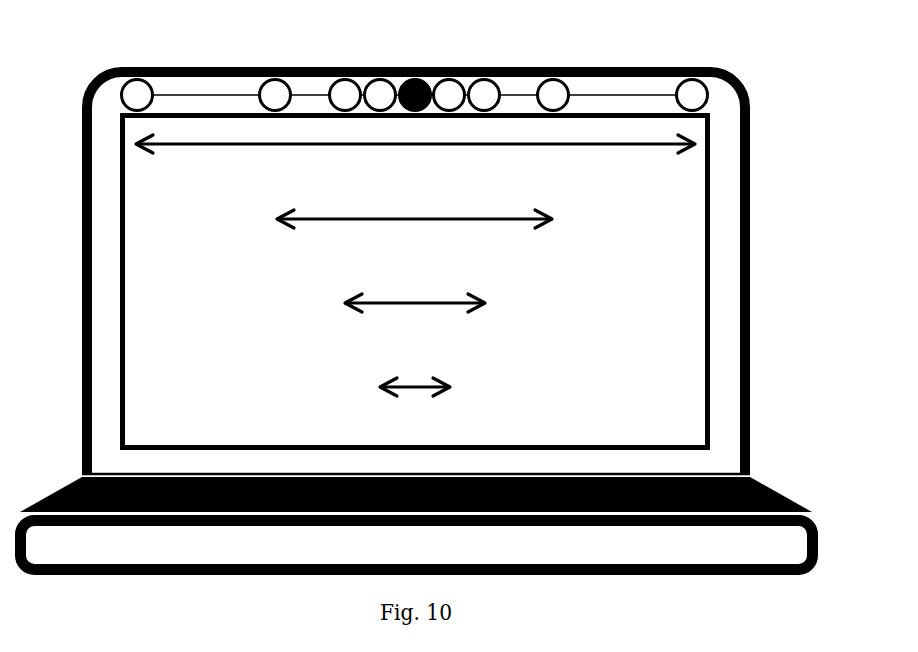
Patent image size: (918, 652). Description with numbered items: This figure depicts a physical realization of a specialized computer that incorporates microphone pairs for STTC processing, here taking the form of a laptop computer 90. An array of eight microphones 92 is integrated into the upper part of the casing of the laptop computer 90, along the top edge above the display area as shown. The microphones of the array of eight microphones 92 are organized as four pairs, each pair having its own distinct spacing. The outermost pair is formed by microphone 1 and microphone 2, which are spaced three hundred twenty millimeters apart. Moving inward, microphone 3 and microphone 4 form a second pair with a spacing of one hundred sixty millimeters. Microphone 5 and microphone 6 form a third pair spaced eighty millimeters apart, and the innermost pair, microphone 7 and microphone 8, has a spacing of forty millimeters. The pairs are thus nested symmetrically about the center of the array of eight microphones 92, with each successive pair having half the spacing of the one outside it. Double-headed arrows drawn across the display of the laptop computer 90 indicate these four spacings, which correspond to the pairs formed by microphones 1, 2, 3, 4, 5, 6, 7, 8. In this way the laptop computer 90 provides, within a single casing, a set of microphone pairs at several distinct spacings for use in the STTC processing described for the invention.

The laptop computer 90 is at (768, 280).
The array of eight microphones 92 is at (415, 60).
The microphone 1 is at (137, 95).
The microphone 2 is at (692, 95).
The microphone 3 is at (275, 95).
The microphone 4 is at (553, 95).
The microphone 5 is at (345, 95).
The microphone 6 is at (484, 95).
The microphone 7 is at (380, 95).
The microphone 8 is at (449, 95).